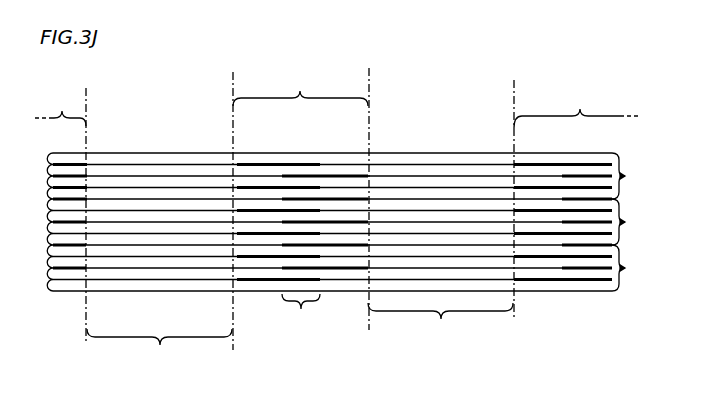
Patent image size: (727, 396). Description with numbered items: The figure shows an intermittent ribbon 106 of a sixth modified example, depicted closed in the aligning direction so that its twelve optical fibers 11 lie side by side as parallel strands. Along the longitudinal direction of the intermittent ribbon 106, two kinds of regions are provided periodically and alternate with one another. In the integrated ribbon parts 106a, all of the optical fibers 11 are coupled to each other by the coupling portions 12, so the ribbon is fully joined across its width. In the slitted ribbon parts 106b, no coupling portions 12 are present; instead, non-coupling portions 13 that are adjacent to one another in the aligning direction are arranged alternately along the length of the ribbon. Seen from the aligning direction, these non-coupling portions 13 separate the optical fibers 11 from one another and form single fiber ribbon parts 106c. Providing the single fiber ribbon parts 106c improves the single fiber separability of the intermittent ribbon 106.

The intermittent ribbon 106 is at (447, 77).
The integrated ribbon part 106a is at (300, 334).
The slitted ribbon part 106b is at (337, 100).
The single fiber ribbon part 106c is at (301, 309).
The optical fiber 11 is at (628, 222).
The coupling portion 12 is at (153, 161).
The non-coupling portion 13 is at (69, 222).